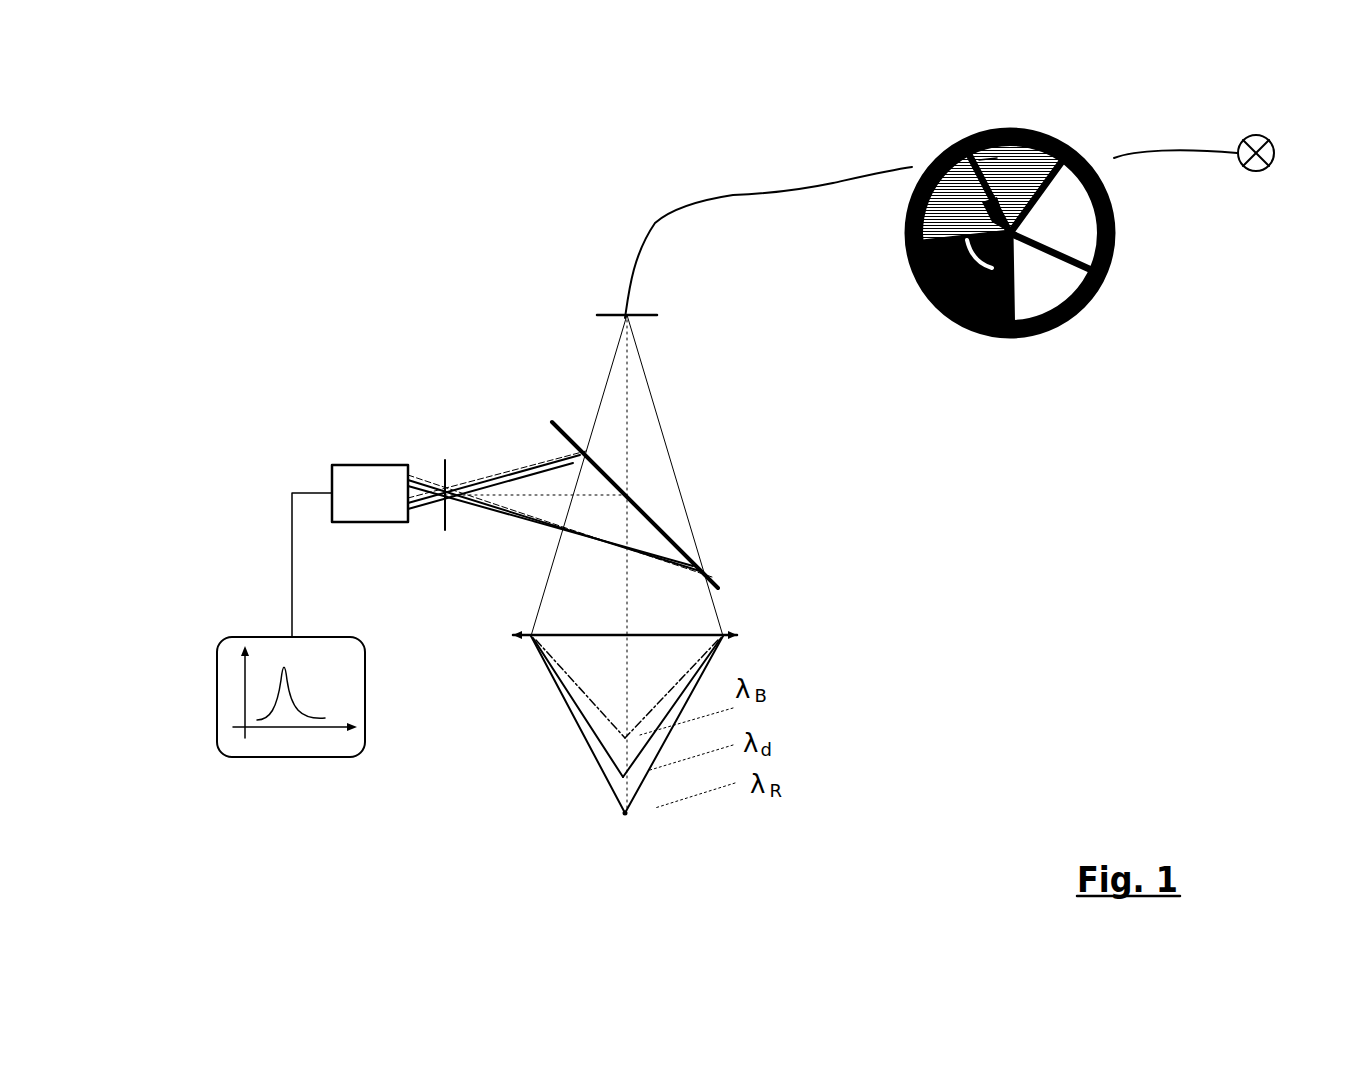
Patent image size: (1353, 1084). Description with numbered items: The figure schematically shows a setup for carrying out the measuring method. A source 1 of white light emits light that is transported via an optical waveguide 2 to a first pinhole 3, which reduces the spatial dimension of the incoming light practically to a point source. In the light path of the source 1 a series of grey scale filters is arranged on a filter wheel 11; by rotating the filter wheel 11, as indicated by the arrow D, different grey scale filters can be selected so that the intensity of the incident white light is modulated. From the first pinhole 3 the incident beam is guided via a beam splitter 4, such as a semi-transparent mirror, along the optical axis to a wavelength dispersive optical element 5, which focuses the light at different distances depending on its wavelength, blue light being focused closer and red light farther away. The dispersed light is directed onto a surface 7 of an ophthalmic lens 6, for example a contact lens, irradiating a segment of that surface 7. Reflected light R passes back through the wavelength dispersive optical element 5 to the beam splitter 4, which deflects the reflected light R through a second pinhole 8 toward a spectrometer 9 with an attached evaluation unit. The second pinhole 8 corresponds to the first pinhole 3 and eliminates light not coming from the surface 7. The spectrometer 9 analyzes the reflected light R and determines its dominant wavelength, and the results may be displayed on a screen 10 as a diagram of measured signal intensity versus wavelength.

The source of white light 1 is at (1254, 172).
The optical waveguide 2 is at (763, 198).
The first pinhole 3 is at (617, 316).
The beam splitter 4 is at (667, 528).
The wavelength dispersive optical element 5 is at (703, 635).
The ophthalmic lens 6 is at (710, 817).
The surface 7 is at (560, 782).
The second pinhole 8 is at (447, 467).
The spectrometer 9 is at (358, 472).
The screen 10 is at (217, 681).
The filter wheel 11 is at (984, 270).
The arrow indicating rotation of the filter wheel D is at (927, 287).
The reflected light R is at (547, 507).